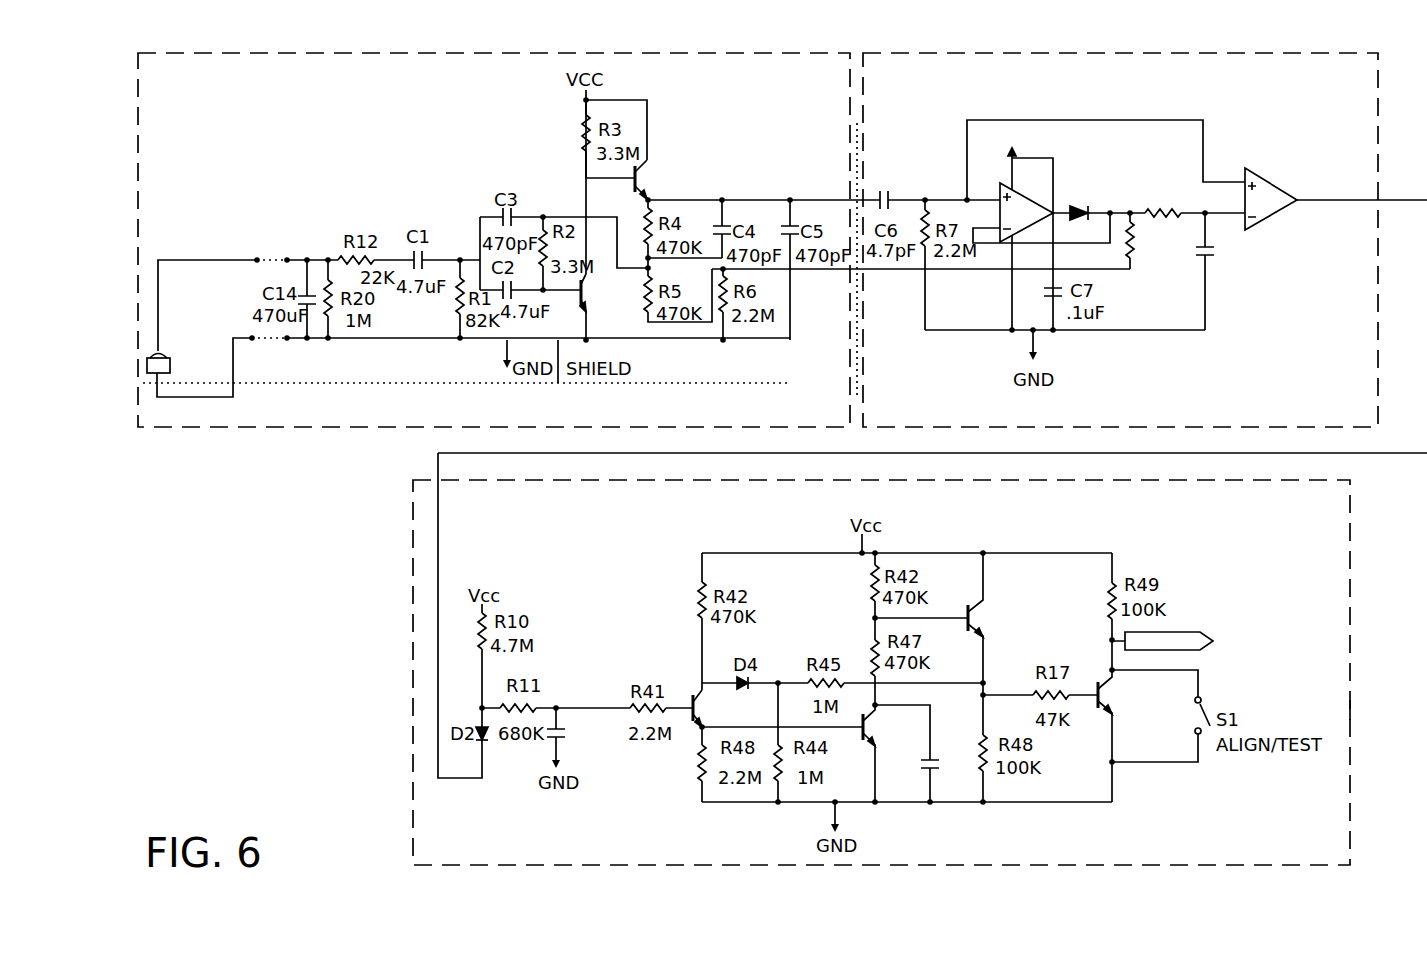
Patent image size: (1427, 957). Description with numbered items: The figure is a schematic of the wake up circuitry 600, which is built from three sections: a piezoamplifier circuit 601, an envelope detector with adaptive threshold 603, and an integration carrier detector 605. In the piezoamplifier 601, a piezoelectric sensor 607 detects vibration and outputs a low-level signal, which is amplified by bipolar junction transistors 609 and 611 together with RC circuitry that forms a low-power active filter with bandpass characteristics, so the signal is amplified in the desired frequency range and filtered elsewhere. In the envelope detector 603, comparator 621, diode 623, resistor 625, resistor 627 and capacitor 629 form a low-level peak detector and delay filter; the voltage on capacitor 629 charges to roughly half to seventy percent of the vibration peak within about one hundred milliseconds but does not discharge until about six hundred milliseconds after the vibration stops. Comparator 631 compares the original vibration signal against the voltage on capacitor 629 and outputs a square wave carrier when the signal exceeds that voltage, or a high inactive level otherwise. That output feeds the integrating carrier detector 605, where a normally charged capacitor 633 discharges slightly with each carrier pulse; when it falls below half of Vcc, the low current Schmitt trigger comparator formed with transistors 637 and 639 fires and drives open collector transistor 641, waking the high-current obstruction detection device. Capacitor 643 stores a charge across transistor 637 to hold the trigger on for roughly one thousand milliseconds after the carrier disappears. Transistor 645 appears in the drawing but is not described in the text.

The wake up circuitry 600 is at (397, 705).
The piezoamplifier circuit 601 is at (186, 429).
The envelope detector with adaptive threshold 603 is at (1400, 385).
The integration carrier detector 605 is at (1372, 696).
The piezoelectric sensor 607 is at (146, 352).
The bipolar junction transistor 609 is at (648, 170).
The bipolar junction transistor 611 is at (589, 303).
The comparator 621 is at (1003, 187).
The diode 623 is at (1079, 199).
The resistor 625 is at (1156, 263).
The resistor 627 is at (1147, 212).
The capacitor 629 is at (1208, 256).
The comparator 631 is at (1263, 180).
The capacitor 633 is at (552, 737).
The transistor 637 is at (867, 738).
The transistor 639 is at (970, 615).
The open collector transistor 641 is at (1108, 680).
The capacitor 643 is at (937, 770).
The transistor Q4 645 is at (699, 697).